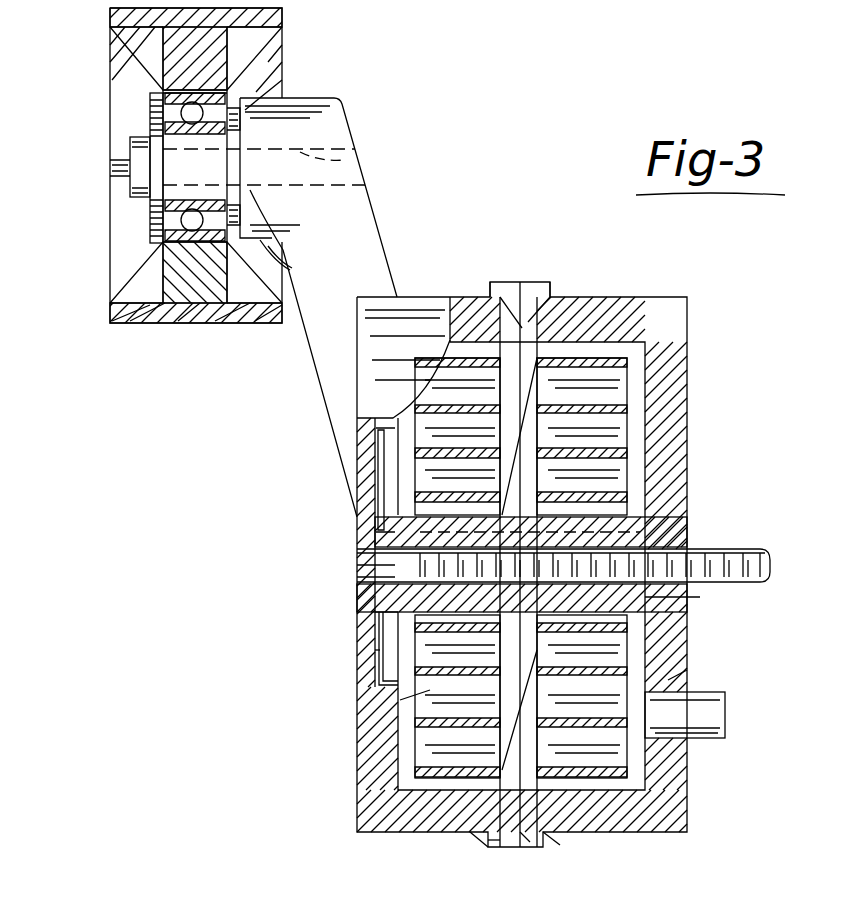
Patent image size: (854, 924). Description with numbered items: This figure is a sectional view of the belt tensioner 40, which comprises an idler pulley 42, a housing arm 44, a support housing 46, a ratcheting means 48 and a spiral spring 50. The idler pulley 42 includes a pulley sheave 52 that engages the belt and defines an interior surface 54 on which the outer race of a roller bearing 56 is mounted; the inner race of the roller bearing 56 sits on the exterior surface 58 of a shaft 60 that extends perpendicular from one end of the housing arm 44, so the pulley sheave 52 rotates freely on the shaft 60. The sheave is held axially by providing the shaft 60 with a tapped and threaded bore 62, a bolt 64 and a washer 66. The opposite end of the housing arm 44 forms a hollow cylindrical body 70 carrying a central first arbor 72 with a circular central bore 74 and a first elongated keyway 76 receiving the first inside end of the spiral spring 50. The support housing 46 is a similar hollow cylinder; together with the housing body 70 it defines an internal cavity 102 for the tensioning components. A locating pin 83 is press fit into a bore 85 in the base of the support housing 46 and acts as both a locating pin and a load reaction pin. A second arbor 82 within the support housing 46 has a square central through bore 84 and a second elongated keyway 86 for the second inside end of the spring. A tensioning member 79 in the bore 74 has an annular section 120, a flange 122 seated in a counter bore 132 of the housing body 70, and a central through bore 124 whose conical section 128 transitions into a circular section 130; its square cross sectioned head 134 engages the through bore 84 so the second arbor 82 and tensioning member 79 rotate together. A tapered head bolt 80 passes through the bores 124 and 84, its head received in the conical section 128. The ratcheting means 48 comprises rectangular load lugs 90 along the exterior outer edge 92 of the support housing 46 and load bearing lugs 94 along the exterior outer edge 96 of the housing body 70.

The belt tensioner 40 is at (462, 122).
The idler pulley 42 is at (284, 12).
The housing arm 44 is at (360, 220).
The support housing 46 is at (675, 330).
The ratcheting means 48 is at (522, 297).
The spiral spring 50 is at (540, 285).
The pulley sheave 52 is at (147, 312).
The interior surface 54 is at (167, 263).
The roller bearing 56 is at (150, 117).
The exterior surface 58 is at (207, 142).
The shaft 60 is at (173, 173).
The tapped and threaded bore 62 is at (370, 161).
The bolt 64 is at (130, 152).
The washer 66 is at (163, 93).
The hollow cylindrical body 70 is at (375, 695).
The first arbor 72 is at (372, 628).
The central bore 74 is at (385, 525).
The first elongated keyway 76 is at (372, 498).
The tensioning member 79 is at (370, 650).
The bolt 80 is at (763, 560).
The second arbor 82 is at (645, 615).
The locating pin 83 is at (727, 713).
The central through bore 84 is at (640, 532).
The bore 85 is at (668, 680).
The second elongated keyway 86 is at (632, 510).
The load lugs 90 is at (538, 840).
The exterior outer edge 92 is at (505, 807).
The load bearing lugs 94 is at (507, 848).
The exterior outer edge 96 is at (507, 815).
The internal cavity 102 is at (635, 780).
The annular section 120 is at (400, 705).
The flange 122 is at (372, 662).
The central through bore 124 is at (372, 575).
The conical section 128 is at (372, 593).
The circular section 130 is at (372, 558).
The counter bore 132 is at (380, 432).
The square cross sectioned head 134 is at (700, 597).